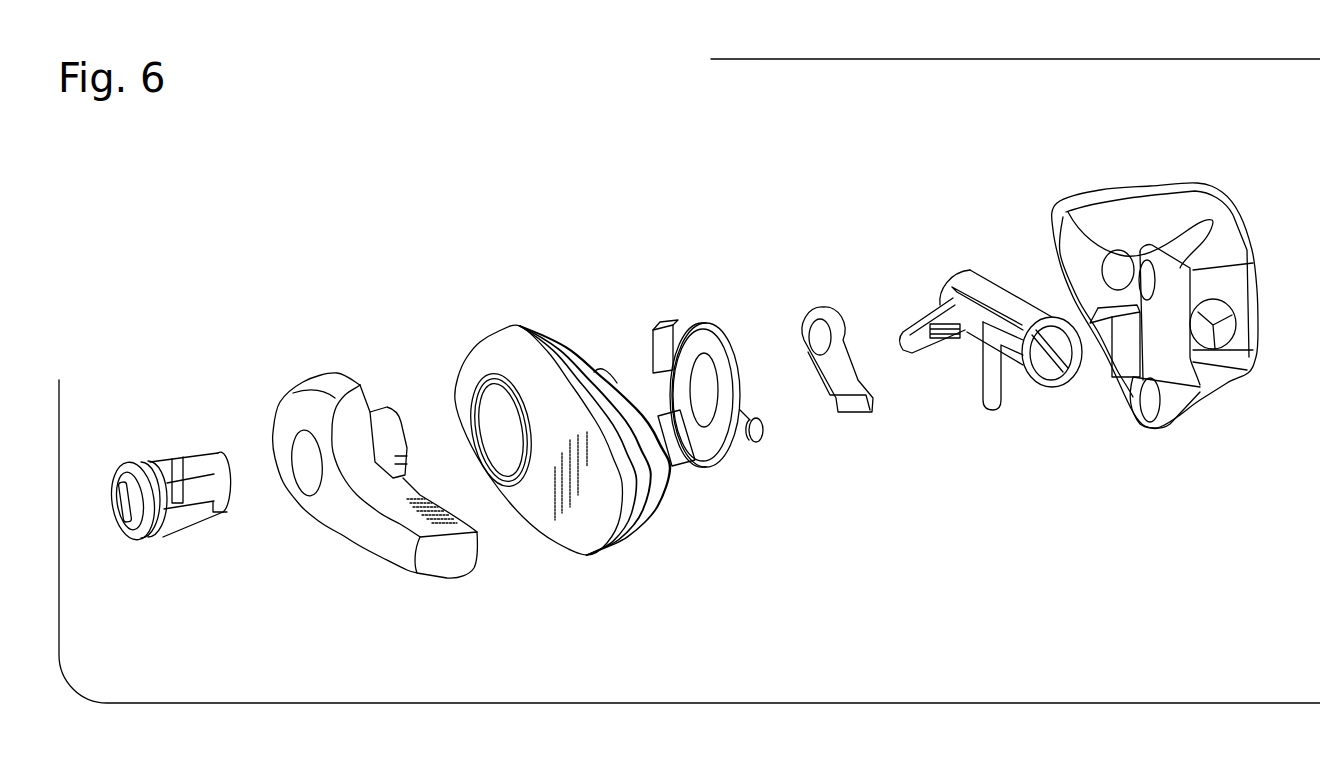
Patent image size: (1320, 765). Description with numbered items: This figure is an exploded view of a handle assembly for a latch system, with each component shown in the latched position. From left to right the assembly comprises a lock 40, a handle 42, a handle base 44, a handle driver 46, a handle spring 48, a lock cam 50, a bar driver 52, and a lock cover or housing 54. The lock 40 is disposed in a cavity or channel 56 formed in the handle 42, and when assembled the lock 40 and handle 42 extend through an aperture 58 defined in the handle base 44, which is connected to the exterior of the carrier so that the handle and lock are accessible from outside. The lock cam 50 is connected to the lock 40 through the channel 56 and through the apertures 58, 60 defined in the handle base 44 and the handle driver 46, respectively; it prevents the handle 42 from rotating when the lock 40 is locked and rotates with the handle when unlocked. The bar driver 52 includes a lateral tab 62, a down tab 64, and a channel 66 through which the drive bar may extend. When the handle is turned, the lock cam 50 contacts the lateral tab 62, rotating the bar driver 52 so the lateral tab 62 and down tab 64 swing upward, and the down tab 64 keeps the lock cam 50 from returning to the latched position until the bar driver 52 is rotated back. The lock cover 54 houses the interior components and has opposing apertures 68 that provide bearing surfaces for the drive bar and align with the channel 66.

The lock 40 is at (188, 462).
The handle 42 is at (318, 372).
The handle base 44 is at (483, 355).
The handle driver 46 is at (716, 336).
The handle spring 48 is at (756, 443).
The lock cam 50 is at (812, 322).
The bar driver 52 is at (988, 282).
The lock cover or housing 54 is at (1118, 205).
The cavity or channel 56 is at (300, 470).
The aperture 58 is at (487, 421).
The aperture 60 is at (702, 391).
The lateral tab 62 is at (916, 338).
The down tab 64 is at (995, 390).
The channel 66 is at (1060, 358).
The opposing apertures 68 is at (1214, 308).